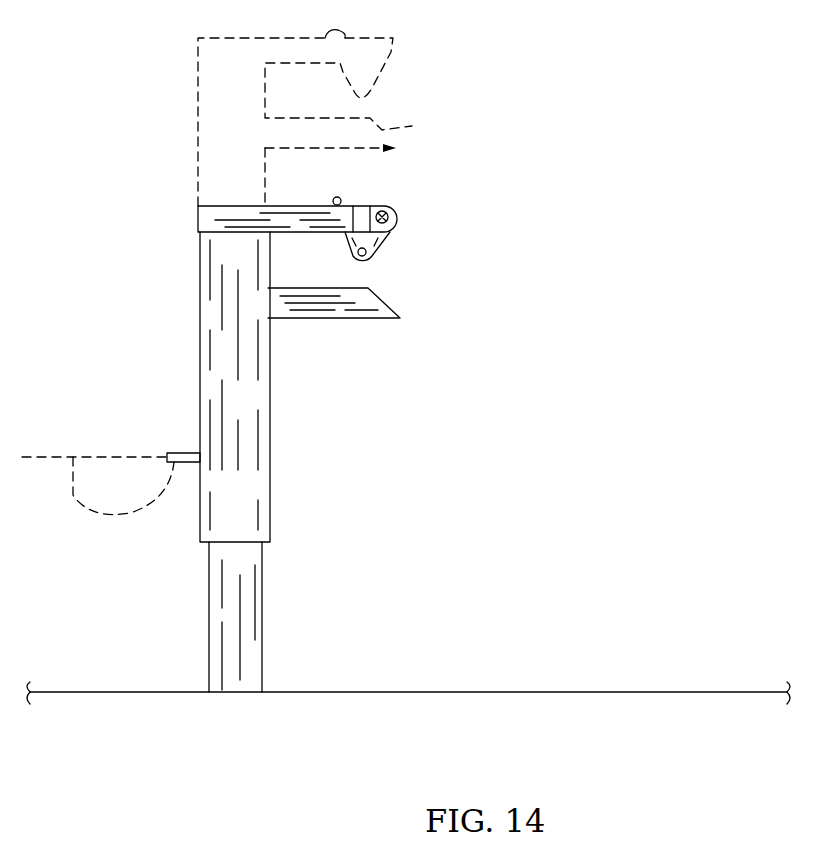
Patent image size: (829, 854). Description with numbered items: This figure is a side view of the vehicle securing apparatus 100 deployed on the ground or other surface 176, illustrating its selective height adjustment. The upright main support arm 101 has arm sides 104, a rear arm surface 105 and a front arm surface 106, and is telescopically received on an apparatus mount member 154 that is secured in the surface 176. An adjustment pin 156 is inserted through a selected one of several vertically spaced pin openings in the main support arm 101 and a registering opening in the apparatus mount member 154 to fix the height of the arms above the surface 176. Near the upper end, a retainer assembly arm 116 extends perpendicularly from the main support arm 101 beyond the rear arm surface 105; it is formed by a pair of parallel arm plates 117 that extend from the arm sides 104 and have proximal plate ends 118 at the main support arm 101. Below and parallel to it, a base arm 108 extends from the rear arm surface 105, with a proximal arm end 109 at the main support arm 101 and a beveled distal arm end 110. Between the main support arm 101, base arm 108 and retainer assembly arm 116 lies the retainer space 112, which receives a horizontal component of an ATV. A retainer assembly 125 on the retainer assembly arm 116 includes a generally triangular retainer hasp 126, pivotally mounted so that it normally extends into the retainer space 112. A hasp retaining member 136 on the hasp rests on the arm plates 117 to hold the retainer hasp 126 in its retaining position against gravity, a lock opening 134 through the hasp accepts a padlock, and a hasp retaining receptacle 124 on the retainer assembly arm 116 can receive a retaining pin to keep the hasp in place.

The vehicle securing apparatus 100 is at (104, 76).
The main support arm 101 is at (209, 387).
The arm sides 104 is at (226, 387).
The rear arm surface 105 is at (270, 410).
The front arm surface 106 is at (209, 387).
The base arm 108 is at (385, 330).
The proximal arm end 109 is at (270, 303).
The distal arm end 110 is at (370, 290).
The retainer space 112 is at (316, 264).
The retainer assembly arm 116 is at (239, 168).
The arm plates 117 is at (228, 192).
The proximal plate ends 118 is at (239, 168).
The hasp retaining receptacle 124 is at (338, 198).
The retainer assembly 125 is at (424, 216).
The retainer hasp 126 is at (404, 248).
The lock opening 134 is at (426, 186).
The hasp retaining member 136 is at (426, 186).
The apparatus mount member 154 is at (240, 597).
The adjustment pin 156 is at (78, 505).
The surface 176 is at (467, 692).